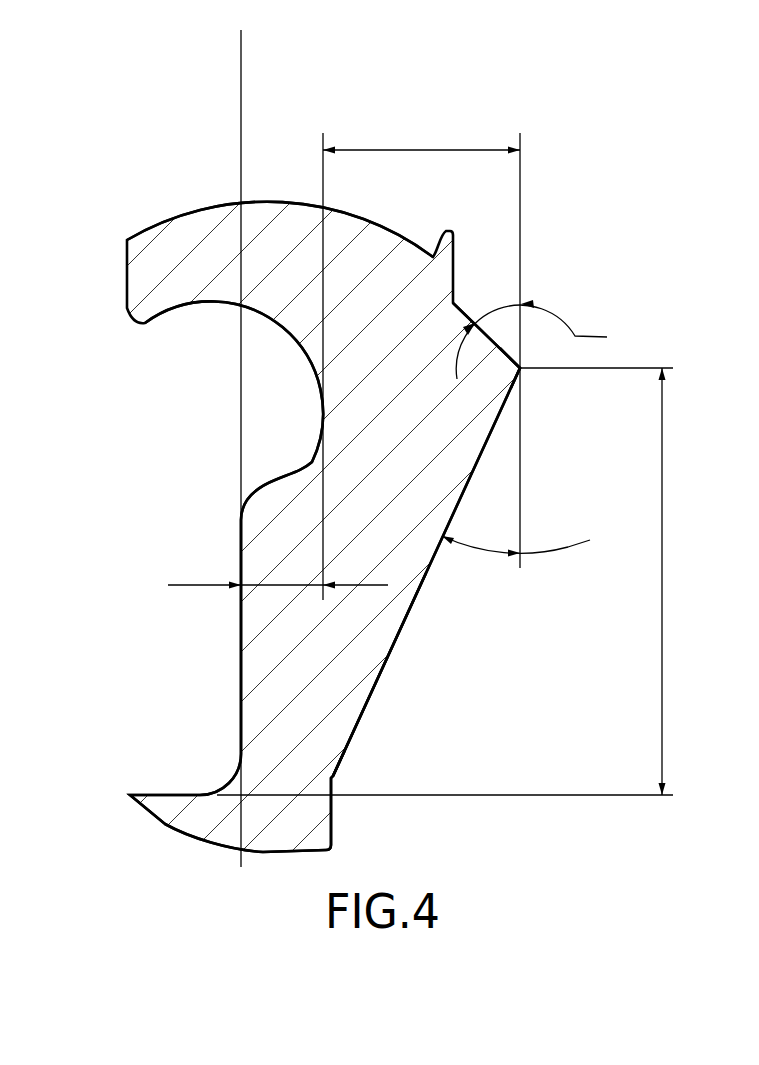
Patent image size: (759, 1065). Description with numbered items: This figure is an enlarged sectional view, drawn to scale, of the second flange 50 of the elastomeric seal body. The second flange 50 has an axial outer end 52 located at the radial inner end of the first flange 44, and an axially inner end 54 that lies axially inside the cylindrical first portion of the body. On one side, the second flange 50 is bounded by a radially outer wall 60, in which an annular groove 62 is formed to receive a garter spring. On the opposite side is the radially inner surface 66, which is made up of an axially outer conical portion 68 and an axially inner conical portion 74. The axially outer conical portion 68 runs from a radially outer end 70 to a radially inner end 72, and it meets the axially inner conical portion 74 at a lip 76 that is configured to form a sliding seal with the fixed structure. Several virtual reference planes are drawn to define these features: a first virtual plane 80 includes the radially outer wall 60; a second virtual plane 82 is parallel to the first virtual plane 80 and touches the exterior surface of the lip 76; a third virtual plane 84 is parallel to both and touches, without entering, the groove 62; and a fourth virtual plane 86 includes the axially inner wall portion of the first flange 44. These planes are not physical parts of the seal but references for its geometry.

The second flange 50 is at (112, 120).
The axially inner end 54 is at (100, 212).
The first virtual plane 80 is at (241, 112).
The third virtual plane 84 is at (323, 170).
The second virtual plane 82 is at (520, 185).
The axially inner conical portion 74 is at (490, 338).
The lip 76 is at (535, 352).
The radially inner end 72 is at (506, 400).
The radially inner surface 66 is at (489, 471).
The annular groove 62 is at (272, 440).
The radially outer wall 60 is at (241, 648).
The axially outer conical portion 68 is at (395, 646).
The axial outer end 52 is at (228, 784).
The radially outer end 70 is at (336, 780).
The fourth virtual plane 86 is at (472, 795).
The first flange 44 is at (184, 822).